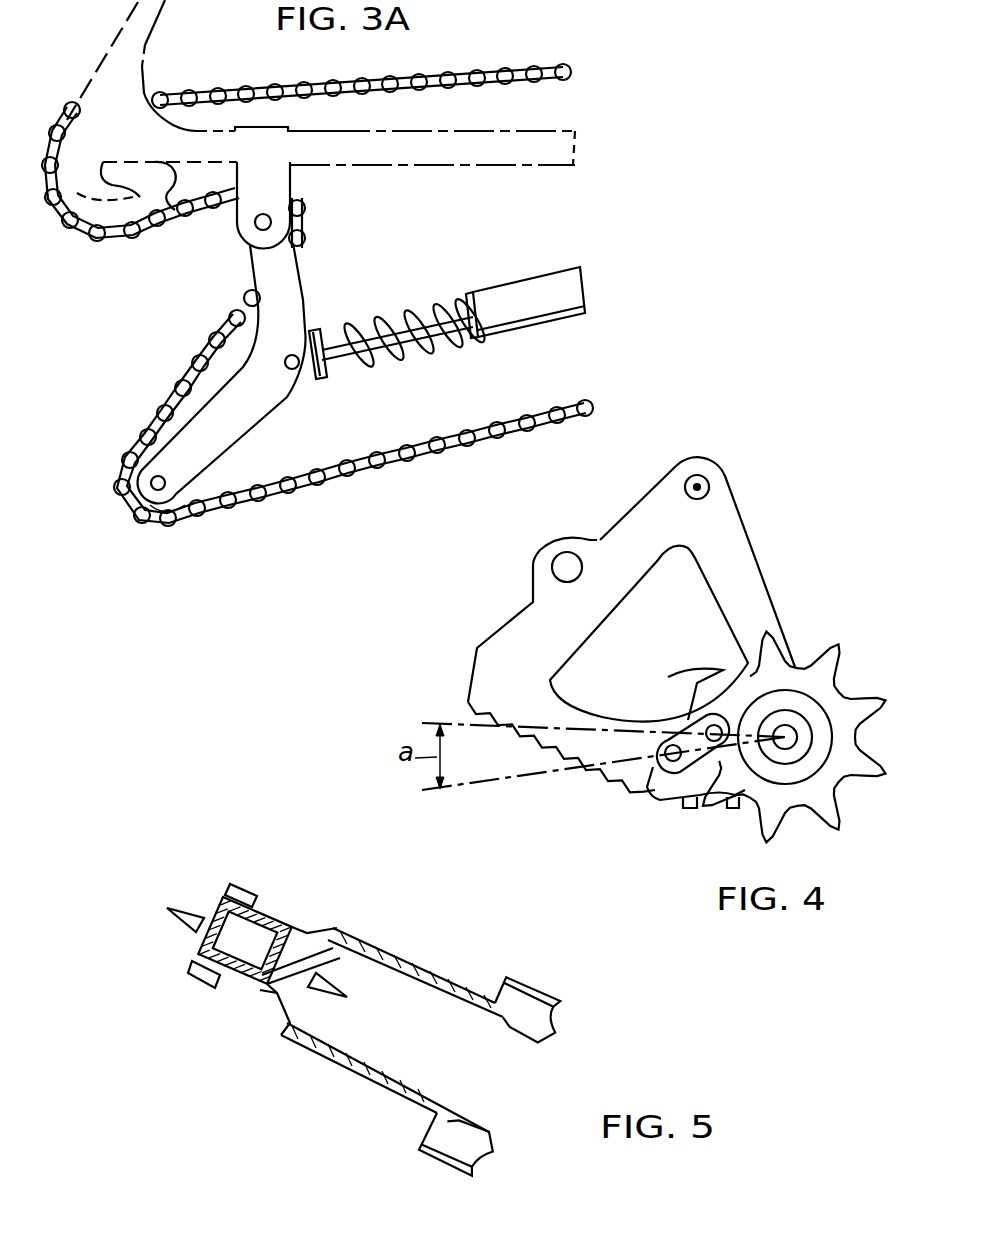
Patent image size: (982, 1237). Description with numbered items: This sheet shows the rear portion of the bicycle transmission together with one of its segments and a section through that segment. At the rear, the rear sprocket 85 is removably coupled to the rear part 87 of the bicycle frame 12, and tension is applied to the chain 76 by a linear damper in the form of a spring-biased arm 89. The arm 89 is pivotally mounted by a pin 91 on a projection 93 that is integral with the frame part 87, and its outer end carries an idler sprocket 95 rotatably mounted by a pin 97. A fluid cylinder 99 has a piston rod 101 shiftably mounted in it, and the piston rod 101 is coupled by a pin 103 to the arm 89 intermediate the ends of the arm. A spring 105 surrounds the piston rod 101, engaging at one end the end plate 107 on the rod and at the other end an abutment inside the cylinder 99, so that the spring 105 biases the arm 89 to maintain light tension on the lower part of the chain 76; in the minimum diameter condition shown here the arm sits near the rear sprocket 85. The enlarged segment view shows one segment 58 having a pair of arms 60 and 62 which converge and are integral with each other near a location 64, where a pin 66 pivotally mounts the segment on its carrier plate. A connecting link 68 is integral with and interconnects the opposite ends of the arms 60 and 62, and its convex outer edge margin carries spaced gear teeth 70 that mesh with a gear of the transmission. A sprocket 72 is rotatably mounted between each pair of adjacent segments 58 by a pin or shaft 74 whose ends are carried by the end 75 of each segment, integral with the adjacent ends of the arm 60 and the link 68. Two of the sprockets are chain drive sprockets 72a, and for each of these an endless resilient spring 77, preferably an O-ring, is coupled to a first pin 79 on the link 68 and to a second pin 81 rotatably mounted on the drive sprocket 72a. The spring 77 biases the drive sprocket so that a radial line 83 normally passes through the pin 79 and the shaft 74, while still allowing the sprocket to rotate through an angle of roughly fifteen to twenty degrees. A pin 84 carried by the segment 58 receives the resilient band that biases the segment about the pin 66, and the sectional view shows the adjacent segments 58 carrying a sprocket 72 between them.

In FIG. 3A, the bicycle frame 12 is at (428, 133).
In FIG. 3A, the chain 76 is at (447, 72).
In FIG. 3A, the rear sprocket 85 is at (122, 213).
In FIG. 3A, the rear part of bicycle frame 87 is at (222, 128).
In FIG. 3A, the spring-biased arm 89 is at (238, 418).
In FIG. 3A, the pin 91 is at (254, 224).
In FIG. 3A, the projection 93 is at (272, 175).
In FIG. 3A, the idler sprocket 95 is at (194, 493).
In FIG. 3A, the pin 97 is at (152, 492).
In FIG. 3A, the fluid cylinder 99 is at (527, 293).
In FIG. 3A, the piston rod 101 is at (368, 338).
In FIG. 3A, the pin 103 is at (300, 378).
In FIG. 3A, the spring 105 is at (426, 282).
In FIG. 3A, the end plate 107 is at (313, 378).
In FIG. 4, the arm 60 is at (740, 577).
In FIG. 4, the arm 62 is at (633, 533).
In FIG. 4, the location 64 is at (717, 482).
In FIG. 4, the pin 66 is at (694, 487).
In FIG. 4, the connecting link 68 is at (550, 693).
In FIG. 4, the gear teeth 70 is at (664, 800).
In FIG. 4, the chain drive sprocket 72a is at (838, 668).
In FIG. 4, the pin or shaft 74 is at (832, 738).
In FIG. 4, the endless resilient spring 77 is at (684, 725).
In FIG. 4, the first pin 79 is at (641, 790).
In FIG. 4, the second pin 81 is at (717, 703).
In FIG. 4, the radial line 83 is at (543, 777).
In FIG. 5, the segment 58 is at (421, 972).
In FIG. 5, the sprocket 72 is at (198, 920).
In FIG. 5, the end of segment 75 is at (245, 897).
In FIG. 5, the pin 84 is at (558, 1000).